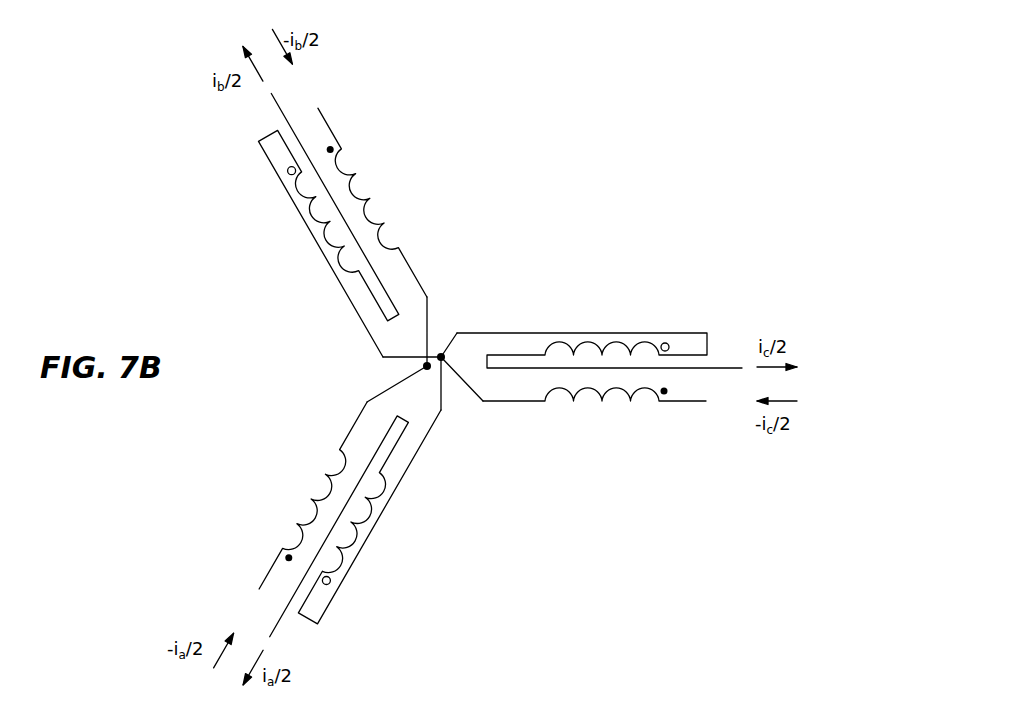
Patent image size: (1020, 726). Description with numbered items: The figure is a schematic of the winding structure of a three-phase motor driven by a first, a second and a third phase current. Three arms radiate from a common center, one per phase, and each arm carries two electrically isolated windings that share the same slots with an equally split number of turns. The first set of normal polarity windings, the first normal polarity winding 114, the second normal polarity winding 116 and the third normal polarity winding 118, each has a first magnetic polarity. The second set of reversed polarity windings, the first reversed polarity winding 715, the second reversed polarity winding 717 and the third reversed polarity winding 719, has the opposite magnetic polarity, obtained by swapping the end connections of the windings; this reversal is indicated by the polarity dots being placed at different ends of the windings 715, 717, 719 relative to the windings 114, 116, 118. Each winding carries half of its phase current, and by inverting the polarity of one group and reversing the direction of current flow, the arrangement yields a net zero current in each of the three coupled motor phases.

The first normal polarity winding 114 is at (318, 504).
The second normal polarity winding 116 is at (362, 196).
The third normal polarity winding 118 is at (603, 404).
The first reversed polarity winding 715 is at (383, 512).
The second reversed polarity winding 717 is at (305, 223).
The third reversed polarity winding 719 is at (555, 333).